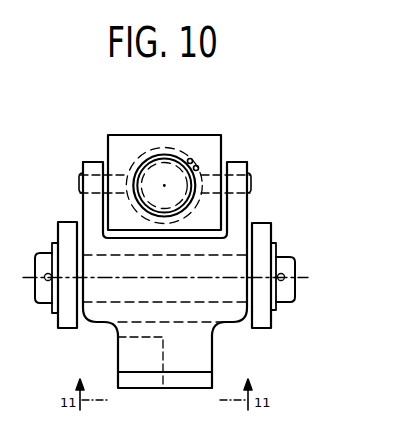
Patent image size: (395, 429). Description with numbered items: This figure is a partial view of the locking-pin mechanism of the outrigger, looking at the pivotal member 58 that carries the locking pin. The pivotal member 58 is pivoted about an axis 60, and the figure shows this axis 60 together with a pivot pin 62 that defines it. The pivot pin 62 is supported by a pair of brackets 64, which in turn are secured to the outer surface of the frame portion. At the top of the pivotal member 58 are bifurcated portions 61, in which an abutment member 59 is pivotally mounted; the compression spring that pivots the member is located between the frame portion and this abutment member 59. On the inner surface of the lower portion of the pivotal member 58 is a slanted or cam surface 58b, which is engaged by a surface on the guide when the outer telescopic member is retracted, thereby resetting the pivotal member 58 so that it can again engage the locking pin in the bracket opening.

The pivotal member 58 is at (222, 311).
The slanted or cam surface 58b is at (137, 352).
The abutment member 59 is at (157, 135).
The axis 60 is at (300, 279).
The bifurcated portions 61 is at (93, 165).
The pivot pin 62 is at (285, 256).
The brackets 64 is at (68, 225).